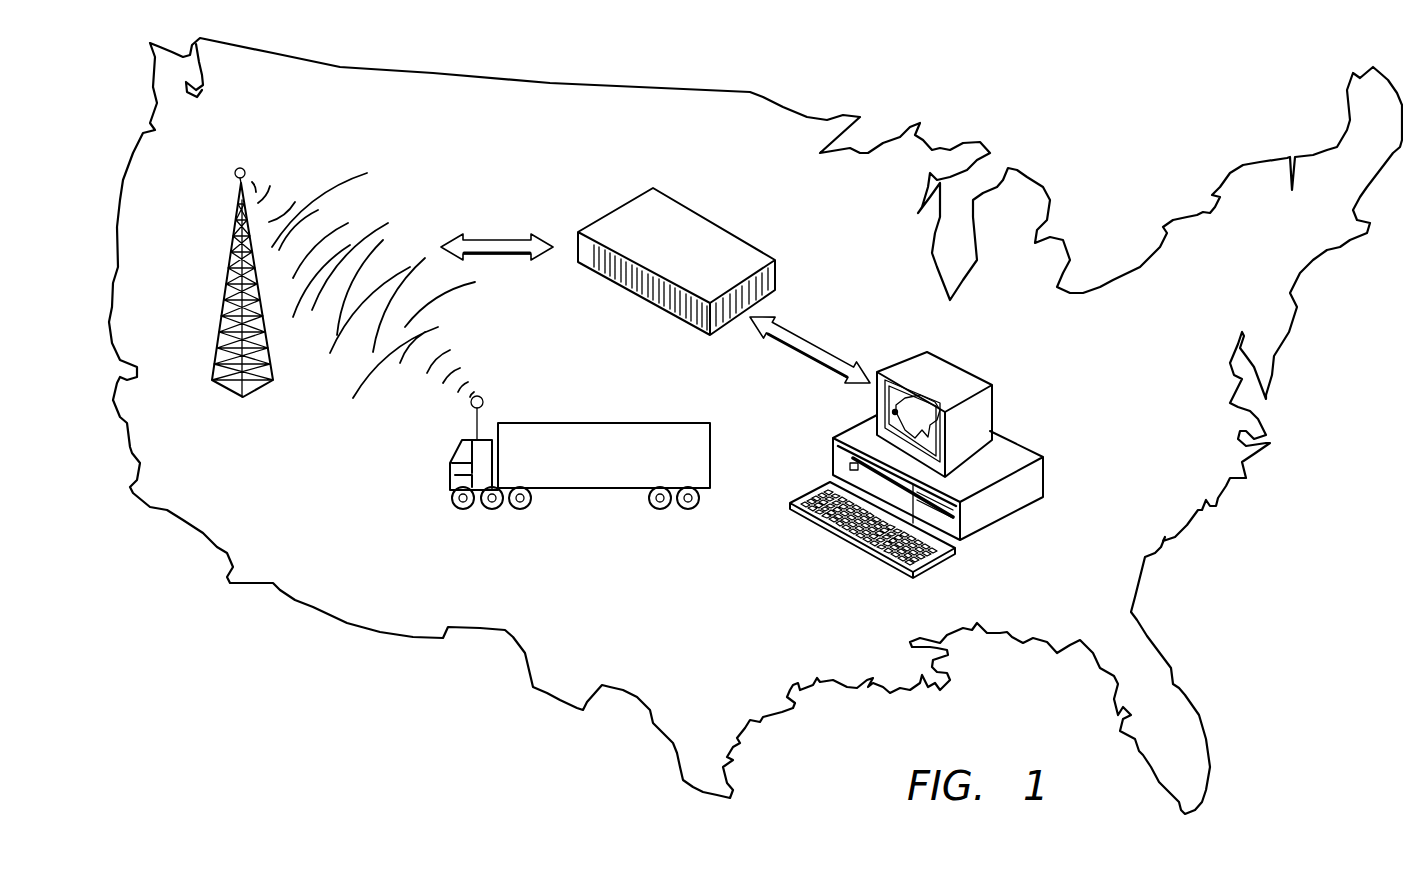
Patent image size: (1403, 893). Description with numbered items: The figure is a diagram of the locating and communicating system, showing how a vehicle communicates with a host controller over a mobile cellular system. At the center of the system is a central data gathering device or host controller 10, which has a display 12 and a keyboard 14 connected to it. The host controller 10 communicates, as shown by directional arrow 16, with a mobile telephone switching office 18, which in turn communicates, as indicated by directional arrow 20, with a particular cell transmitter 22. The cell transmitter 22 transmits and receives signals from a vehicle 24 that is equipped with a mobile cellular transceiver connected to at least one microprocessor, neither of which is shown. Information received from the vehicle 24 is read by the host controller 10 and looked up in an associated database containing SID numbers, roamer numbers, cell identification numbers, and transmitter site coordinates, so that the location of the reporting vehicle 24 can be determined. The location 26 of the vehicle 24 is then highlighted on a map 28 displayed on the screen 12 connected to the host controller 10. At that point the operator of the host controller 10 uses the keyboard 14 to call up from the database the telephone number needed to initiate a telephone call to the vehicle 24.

The host controller 10 is at (1031, 419).
The display 12 is at (910, 399).
The keyboard 14 is at (937, 567).
The directional arrow 16 is at (815, 342).
The mobile telephone switching office 18 is at (702, 220).
The directional arrow 20 is at (507, 238).
The cell transmitter 22 is at (227, 291).
The vehicle 24 is at (603, 490).
The location 26 is at (895, 412).
The map 28 is at (903, 402).